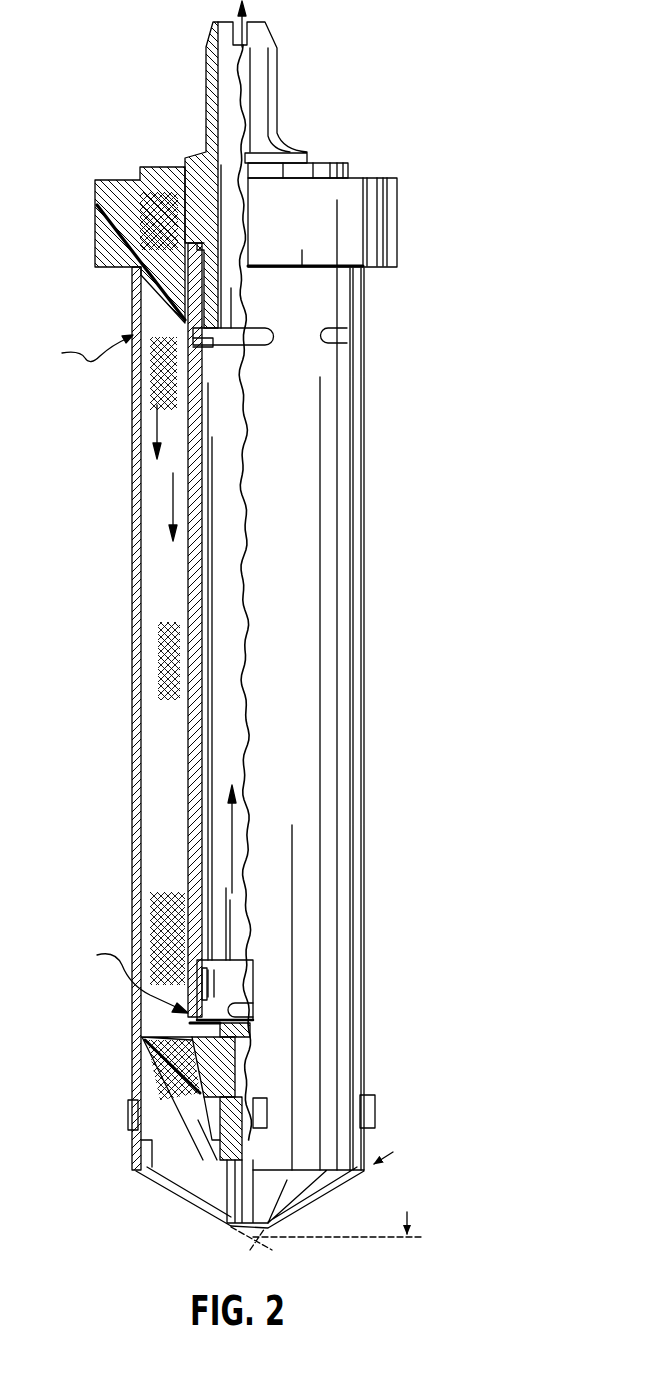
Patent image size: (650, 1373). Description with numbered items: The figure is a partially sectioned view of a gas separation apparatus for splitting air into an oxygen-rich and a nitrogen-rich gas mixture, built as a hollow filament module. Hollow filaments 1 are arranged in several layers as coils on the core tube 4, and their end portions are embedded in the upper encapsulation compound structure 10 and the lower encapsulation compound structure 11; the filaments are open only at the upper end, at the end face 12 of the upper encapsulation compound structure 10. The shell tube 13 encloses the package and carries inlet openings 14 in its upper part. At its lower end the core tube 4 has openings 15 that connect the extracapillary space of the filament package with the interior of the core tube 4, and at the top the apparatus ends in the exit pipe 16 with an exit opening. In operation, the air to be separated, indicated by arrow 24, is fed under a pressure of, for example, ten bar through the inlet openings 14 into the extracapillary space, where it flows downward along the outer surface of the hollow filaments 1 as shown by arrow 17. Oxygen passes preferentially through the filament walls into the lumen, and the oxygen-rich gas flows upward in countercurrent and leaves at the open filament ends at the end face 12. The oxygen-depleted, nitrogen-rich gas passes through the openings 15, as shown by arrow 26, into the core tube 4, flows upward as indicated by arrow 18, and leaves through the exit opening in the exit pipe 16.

The hollow filaments 1 is at (165, 617).
The core tube 4 is at (187, 745).
The upper encapsulation compound structure 10 is at (97, 220).
The lower encapsulation compound structure 11 is at (140, 1099).
The end face 12 is at (148, 167).
The shell tube 13 is at (131, 505).
The inlet openings 14 is at (133, 327).
The openings 15 is at (192, 1027).
The exit pipe 16 is at (255, 68).
The arrow 17 is at (153, 428).
The arrow 18 is at (232, 837).
The arrow 24 is at (82, 353).
The arrow 26 is at (130, 975).